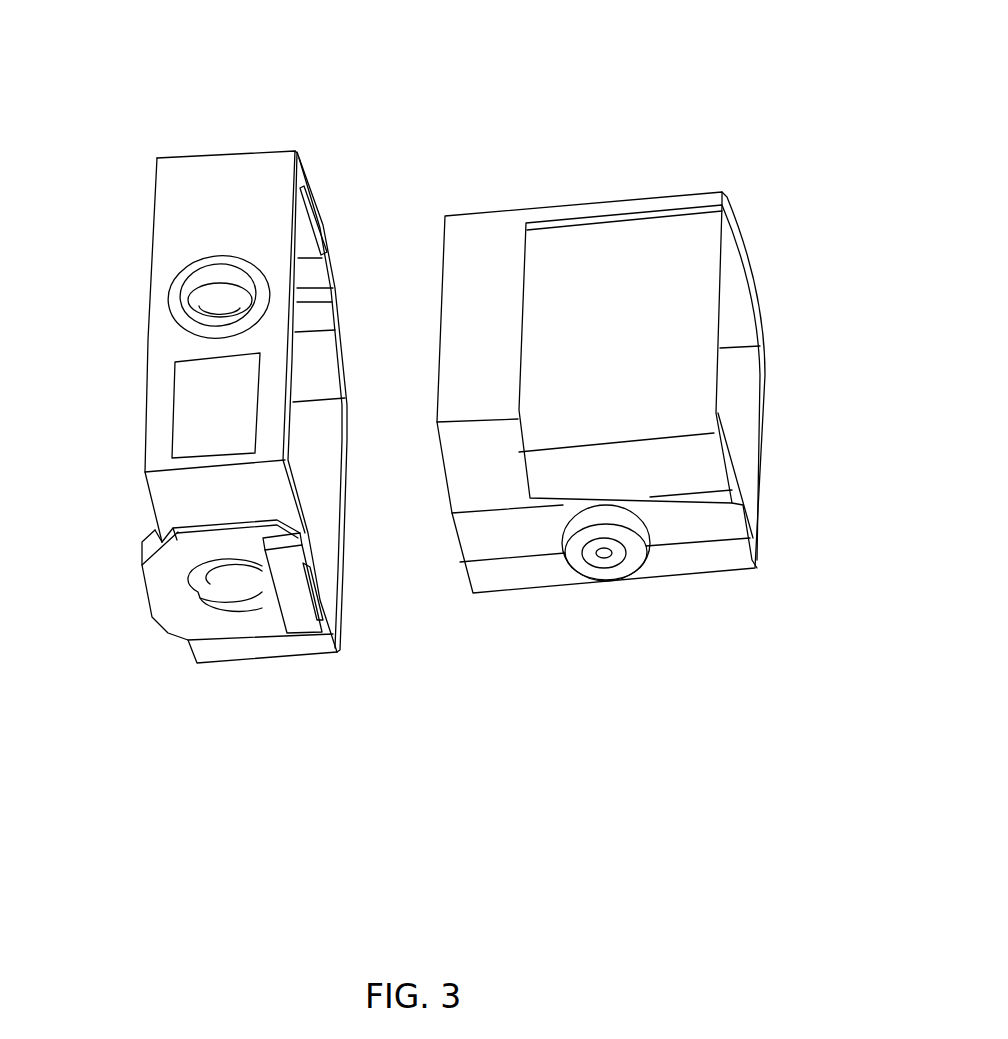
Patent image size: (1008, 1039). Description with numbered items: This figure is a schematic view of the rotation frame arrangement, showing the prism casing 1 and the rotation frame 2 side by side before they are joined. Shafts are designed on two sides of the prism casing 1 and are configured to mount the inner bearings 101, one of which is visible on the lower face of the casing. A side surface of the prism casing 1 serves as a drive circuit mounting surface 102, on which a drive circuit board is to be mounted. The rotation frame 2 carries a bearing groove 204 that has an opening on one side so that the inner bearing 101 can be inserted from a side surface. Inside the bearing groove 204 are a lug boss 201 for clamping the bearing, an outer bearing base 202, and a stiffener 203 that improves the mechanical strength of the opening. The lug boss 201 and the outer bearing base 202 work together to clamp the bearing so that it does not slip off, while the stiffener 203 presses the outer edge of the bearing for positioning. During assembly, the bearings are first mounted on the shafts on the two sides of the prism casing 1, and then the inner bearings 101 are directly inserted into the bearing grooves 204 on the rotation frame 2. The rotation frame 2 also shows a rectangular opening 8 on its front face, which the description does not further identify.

The prism casing 1 is at (661, 382).
The rotation frame 2 is at (270, 382).
The window opening 8 is at (198, 412).
The inner bearing 101 is at (633, 560).
The drive circuit mounting surface 102 is at (645, 367).
The lug boss 201 is at (200, 315).
The outer bearing base 202 is at (265, 617).
The stiffener 203 is at (293, 610).
The bearing groove 204 is at (332, 230).